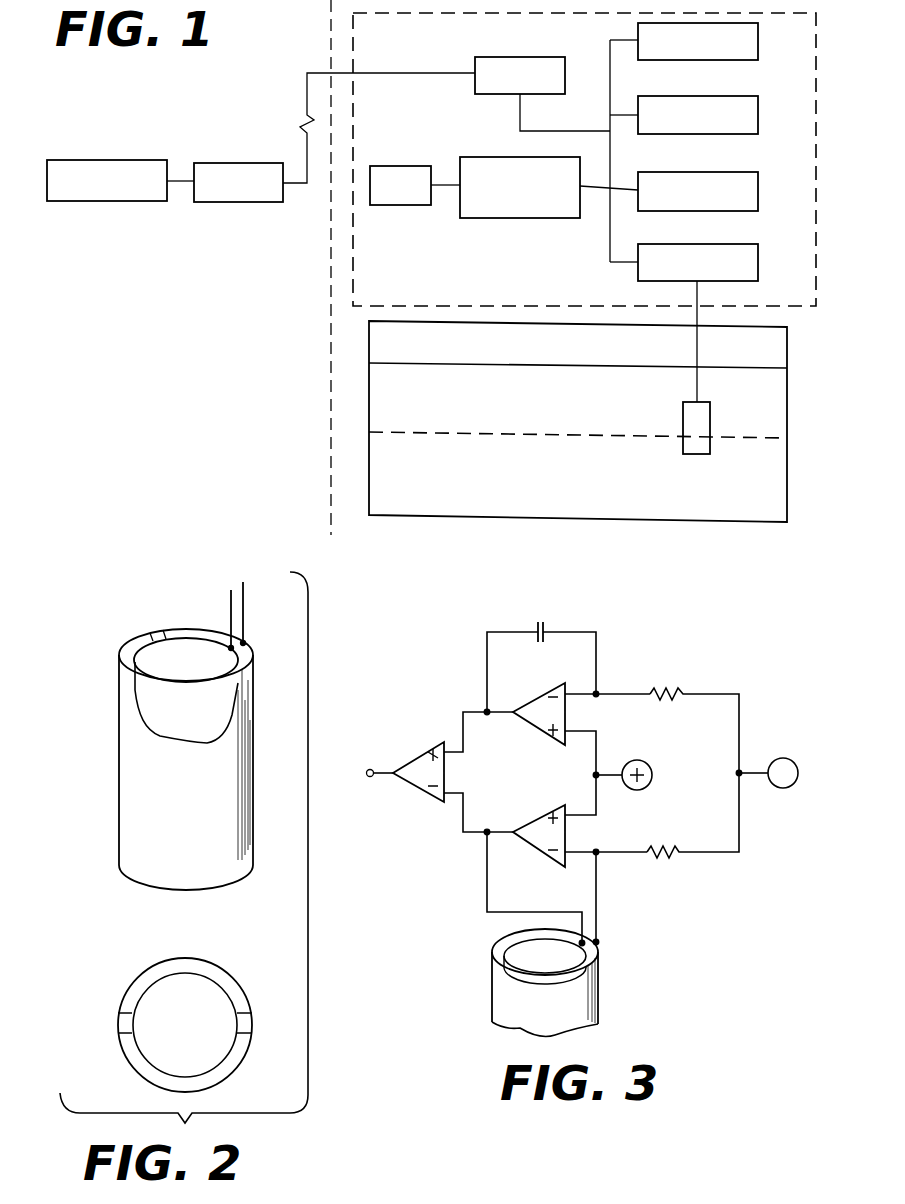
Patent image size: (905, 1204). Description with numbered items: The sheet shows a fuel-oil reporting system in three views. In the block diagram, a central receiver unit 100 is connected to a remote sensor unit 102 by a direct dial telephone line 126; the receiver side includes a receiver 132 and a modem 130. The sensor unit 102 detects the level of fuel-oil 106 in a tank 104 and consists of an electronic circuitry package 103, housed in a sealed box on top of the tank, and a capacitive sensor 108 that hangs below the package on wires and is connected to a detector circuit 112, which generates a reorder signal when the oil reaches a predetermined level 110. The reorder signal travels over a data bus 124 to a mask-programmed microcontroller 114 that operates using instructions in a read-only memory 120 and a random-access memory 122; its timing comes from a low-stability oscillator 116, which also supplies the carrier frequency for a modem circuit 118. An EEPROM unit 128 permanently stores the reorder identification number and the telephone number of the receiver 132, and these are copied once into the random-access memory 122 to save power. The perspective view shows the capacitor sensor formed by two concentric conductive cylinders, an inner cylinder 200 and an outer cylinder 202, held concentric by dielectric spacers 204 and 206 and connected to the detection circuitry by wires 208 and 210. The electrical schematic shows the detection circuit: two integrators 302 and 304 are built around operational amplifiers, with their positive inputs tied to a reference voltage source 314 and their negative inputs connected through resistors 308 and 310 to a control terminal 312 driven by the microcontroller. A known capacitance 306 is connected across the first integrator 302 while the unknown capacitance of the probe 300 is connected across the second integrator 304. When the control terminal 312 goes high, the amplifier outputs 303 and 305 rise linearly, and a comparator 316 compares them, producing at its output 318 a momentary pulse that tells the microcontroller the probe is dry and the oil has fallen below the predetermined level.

In FIG. 1, the central receiver unit 100 is at (162, 498).
In FIG. 1, the remote sensor unit 102 is at (574, 545).
In FIG. 1, the electronic circuitry package 103 is at (353, 44).
In FIG. 1, the tank 104 is at (369, 418).
In FIG. 1, the fuel-oil 106 is at (383, 375).
In FIG. 1, the capacitive sensor 108 is at (708, 452).
In FIG. 1, the predetermined level 110 is at (733, 438).
In FIG. 1, the detector circuit 112 is at (758, 262).
In FIG. 1, the microcontroller 114 is at (497, 157).
In FIG. 1, the oscillator 116 is at (398, 166).
In FIG. 1, the modem circuit 118 is at (515, 57).
In FIG. 1, the read-only memory 120 is at (758, 114).
In FIG. 1, the random-access memory 122 is at (758, 190).
In FIG. 1, the data bus 124 is at (610, 160).
In FIG. 1, the direct dial telephone line 126 is at (291, 185).
In FIG. 1, the EEPROM unit 128 is at (758, 40).
In FIG. 1, the modem 130 is at (234, 163).
In FIG. 1, the receiver 132 is at (112, 160).
In FIG. 2, the inner cylinder 200 is at (150, 692).
In FIG. 2, the outer cylinder 202 is at (130, 752).
In FIG. 2, the dielectric spacer 204 is at (119, 1022).
In FIG. 2, the dielectric spacer 206 is at (150, 631).
In FIG. 2, the wire 208 is at (229, 603).
In FIG. 2, the wire 210 is at (245, 607).
In FIG. 3, the probe 300 is at (600, 990).
In FIG. 3, the integrator 302 is at (540, 730).
In FIG. 3, the amplifier output 303 is at (480, 708).
In FIG. 3, the integrator 304 is at (546, 815).
In FIG. 3, the amplifier output 305 is at (462, 824).
In FIG. 3, the known capacitance 306 is at (548, 630).
In FIG. 3, the resistor 308 is at (676, 692).
In FIG. 3, the resistor 310 is at (672, 850).
In FIG. 3, the control terminal 312 is at (786, 757).
In FIG. 3, the reference voltage source 314 is at (645, 764).
In FIG. 3, the comparator 316 is at (425, 755).
In FIG. 3, the output 318 is at (372, 768).